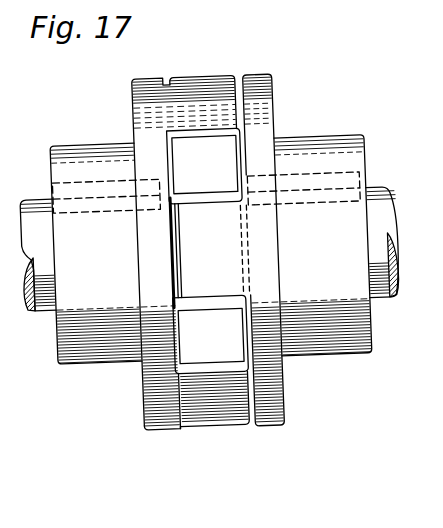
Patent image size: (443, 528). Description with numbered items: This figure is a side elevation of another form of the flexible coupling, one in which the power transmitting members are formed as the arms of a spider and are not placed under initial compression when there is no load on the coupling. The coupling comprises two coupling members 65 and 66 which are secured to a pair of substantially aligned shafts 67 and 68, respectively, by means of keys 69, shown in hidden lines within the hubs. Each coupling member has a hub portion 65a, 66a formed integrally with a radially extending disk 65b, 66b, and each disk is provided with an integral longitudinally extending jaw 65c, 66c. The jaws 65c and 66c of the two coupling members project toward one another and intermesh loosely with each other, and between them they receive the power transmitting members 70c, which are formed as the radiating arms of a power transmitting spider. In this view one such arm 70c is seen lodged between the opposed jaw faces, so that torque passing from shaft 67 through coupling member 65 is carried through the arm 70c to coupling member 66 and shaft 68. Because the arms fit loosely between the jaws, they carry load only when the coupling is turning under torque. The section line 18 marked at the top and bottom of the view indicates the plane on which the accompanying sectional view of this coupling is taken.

The section line 18- 18 is at (246, 72).
The coupling member 65 is at (106, 357).
The hub portion 65a is at (59, 357).
The radially extending disk 65b is at (146, 424).
The jaw 65c is at (205, 93).
The coupling member 66 is at (323, 357).
The hub portion 66a is at (416, 389).
The radially extending disk 66b is at (341, 452).
The jaw 66c is at (234, 252).
The shaft 67 is at (38, 303).
The shaft 68 is at (378, 302).
The key 69 is at (67, 176).
The power transmitting member 70c is at (236, 173).